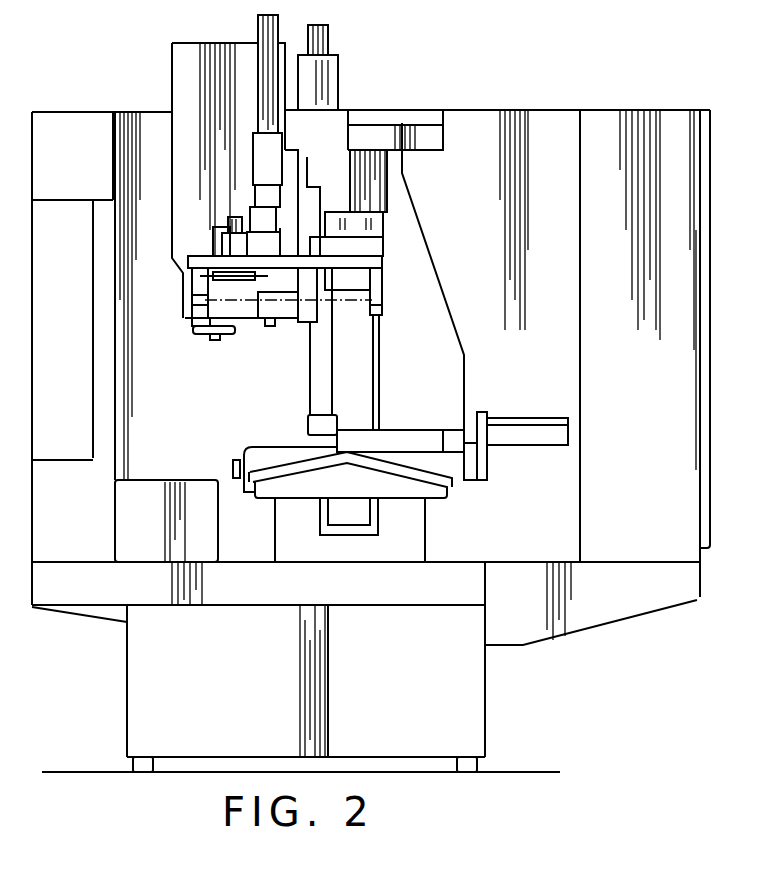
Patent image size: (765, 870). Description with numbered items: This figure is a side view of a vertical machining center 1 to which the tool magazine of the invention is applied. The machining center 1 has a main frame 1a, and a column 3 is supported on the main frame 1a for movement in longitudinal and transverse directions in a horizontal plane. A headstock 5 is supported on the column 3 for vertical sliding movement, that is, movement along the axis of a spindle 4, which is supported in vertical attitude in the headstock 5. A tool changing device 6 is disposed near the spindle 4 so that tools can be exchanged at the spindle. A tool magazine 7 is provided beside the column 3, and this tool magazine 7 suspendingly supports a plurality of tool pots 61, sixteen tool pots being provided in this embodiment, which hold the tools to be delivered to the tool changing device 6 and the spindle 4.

The vertical machining center 1 is at (370, 108).
The main frame 1a is at (546, 110).
The column 3 is at (415, 235).
The spindle 4 is at (190, 322).
The headstock 5 is at (210, 43).
The tool changing device 6 is at (219, 340).
The tool magazine 7 is at (385, 265).
The tool pots 61 is at (383, 283).